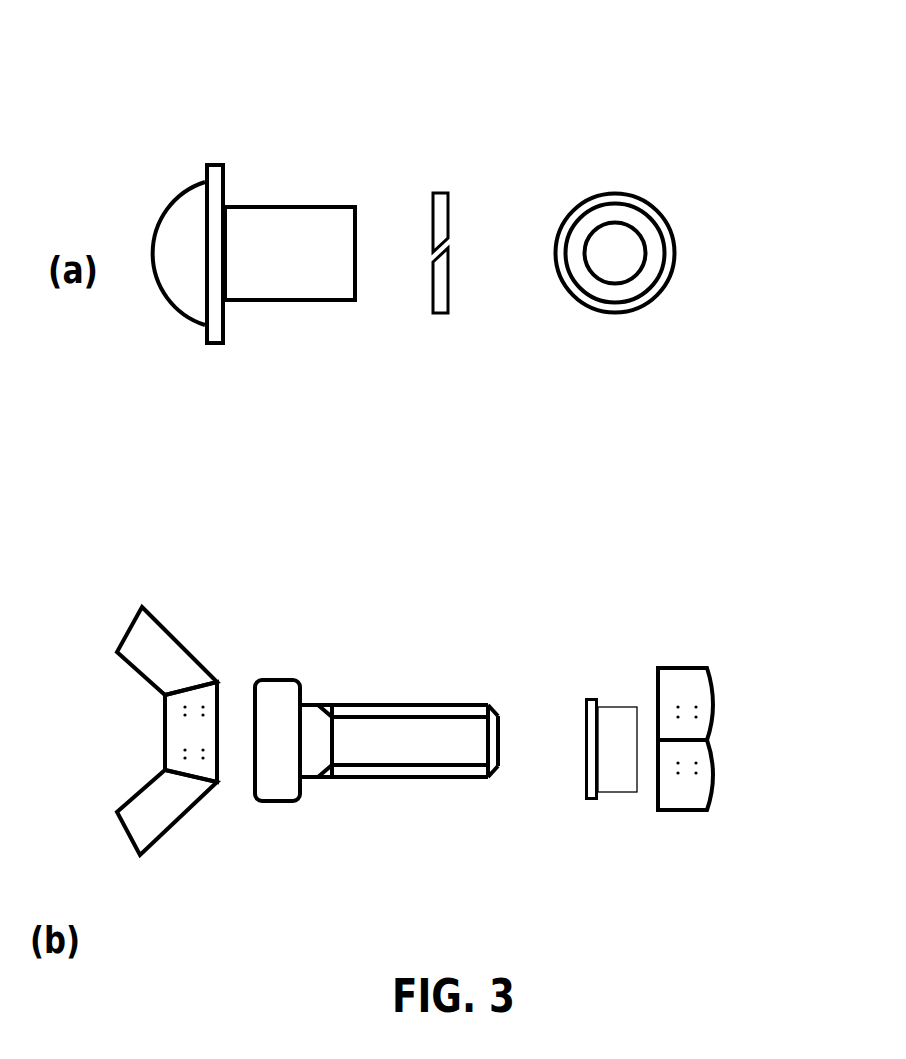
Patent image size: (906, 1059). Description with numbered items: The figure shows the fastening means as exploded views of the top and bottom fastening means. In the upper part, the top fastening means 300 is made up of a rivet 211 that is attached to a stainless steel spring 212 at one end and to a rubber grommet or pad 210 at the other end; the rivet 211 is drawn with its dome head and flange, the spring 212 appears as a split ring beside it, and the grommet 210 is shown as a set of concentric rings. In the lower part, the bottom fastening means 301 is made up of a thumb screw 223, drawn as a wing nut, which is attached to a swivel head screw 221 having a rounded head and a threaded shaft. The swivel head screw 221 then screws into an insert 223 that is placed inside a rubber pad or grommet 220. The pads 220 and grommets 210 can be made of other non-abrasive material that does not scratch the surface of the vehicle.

The fastener assembly (a) 300 is at (433, 75).
The bottom fastening means 301 is at (427, 600).
The rubber grommet or pad 210 is at (630, 233).
The rivet 211 is at (185, 210).
The stainless steel spring 212 is at (441, 315).
The rubber pad or grommet 220 is at (682, 680).
The swivel head screw 221 is at (382, 743).
The thumb screw 223 is at (165, 652).